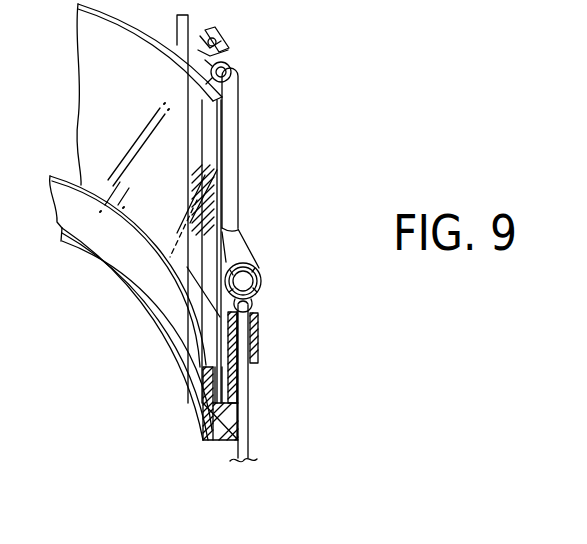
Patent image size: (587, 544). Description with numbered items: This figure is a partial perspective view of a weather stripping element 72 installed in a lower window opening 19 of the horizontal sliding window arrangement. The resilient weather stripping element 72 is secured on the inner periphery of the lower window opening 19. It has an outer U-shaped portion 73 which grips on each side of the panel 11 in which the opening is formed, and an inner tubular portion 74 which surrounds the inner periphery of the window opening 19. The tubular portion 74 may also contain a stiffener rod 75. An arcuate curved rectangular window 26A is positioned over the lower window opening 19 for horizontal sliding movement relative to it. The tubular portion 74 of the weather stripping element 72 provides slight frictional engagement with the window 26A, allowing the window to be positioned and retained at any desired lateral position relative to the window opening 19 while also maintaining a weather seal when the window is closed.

The panel 11 is at (252, 448).
The lower window opening 19 is at (232, 50).
The arcuate curved rectangular window 26A is at (219, 170).
The weather stripping element 72 is at (252, 240).
The outer U-shaped portion 73 is at (218, 36).
The inner tubular portion 74 is at (240, 132).
The stiffener rod 75 is at (230, 62).